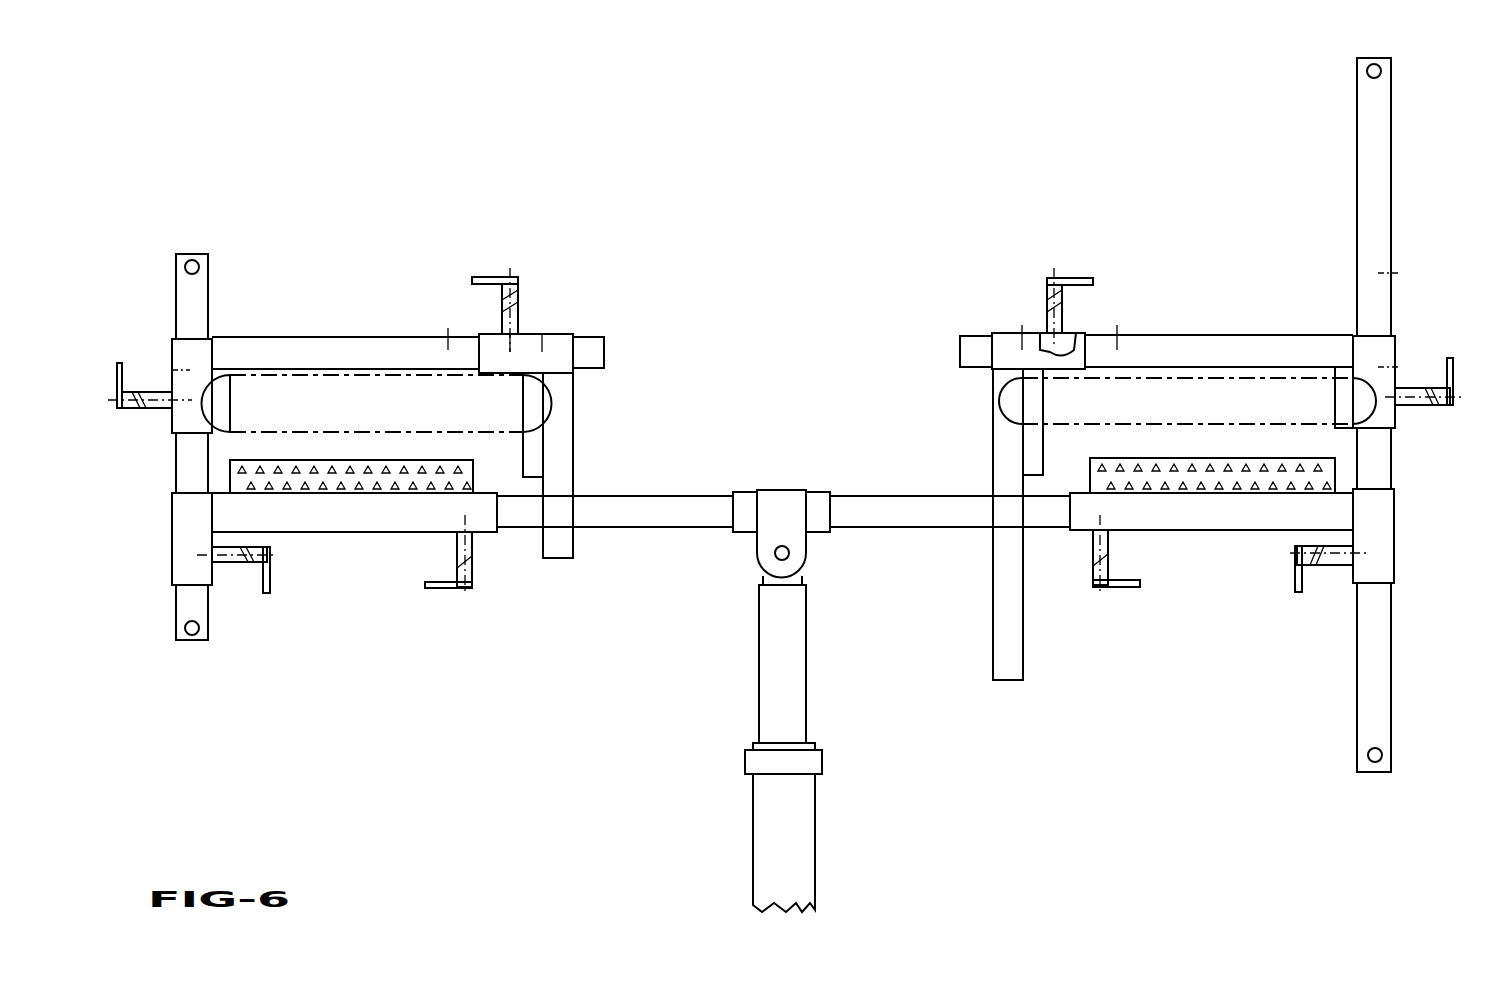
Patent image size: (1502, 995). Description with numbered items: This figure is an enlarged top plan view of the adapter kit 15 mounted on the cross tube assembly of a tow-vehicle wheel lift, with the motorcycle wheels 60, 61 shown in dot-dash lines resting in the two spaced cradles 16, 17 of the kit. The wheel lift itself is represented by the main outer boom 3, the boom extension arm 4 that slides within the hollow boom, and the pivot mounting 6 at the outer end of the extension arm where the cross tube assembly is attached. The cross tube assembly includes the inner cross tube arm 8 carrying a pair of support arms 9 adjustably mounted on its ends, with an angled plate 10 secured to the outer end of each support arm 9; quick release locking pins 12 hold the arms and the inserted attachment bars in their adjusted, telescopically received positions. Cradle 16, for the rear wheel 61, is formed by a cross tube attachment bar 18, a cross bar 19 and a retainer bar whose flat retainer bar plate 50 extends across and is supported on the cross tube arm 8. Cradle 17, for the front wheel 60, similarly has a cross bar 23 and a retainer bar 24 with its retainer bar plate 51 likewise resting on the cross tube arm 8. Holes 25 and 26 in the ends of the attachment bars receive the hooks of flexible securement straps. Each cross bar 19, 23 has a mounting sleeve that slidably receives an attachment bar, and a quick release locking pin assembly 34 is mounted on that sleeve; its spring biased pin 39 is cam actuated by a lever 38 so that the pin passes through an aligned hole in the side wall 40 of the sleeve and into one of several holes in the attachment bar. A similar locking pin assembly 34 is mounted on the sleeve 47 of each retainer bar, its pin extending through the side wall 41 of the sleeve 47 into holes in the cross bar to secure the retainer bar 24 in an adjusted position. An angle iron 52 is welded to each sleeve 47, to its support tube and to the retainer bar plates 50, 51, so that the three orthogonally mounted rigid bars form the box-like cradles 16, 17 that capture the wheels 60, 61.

The main outer boom 3 is at (790, 870).
The boom extension arm 4 is at (790, 690).
The pivot mounting 6 is at (784, 553).
The inner cross tube arm 8 is at (940, 510).
The support arm 9 is at (292, 513).
The angled plate 10 is at (370, 480).
The quick release locking pin 12 is at (230, 565).
The adapter kit 15 is at (753, 243).
The cradle 16 is at (348, 333).
The cradle 17 is at (1205, 322).
The cross tube attachment bar 18 is at (172, 462).
The cross bar 19 is at (262, 335).
The cross bar 23 is at (1138, 333).
The retainer bar 24 is at (990, 395).
The hole 25 is at (195, 640).
The hole 26 is at (1376, 71).
The quick release locking pin assembly 34 is at (517, 276).
The lever 38 is at (1450, 365).
The spring biased pin 39 is at (1053, 300).
The side wall 40 is at (175, 348).
The side wall 41 is at (565, 332).
The sleeve 47 is at (533, 345).
The retainer bar plate 50 is at (560, 545).
The retainer bar plate 51 is at (1017, 656).
The angle iron 52 is at (538, 457).
The wheel 60 is at (1290, 400).
The wheel 61 is at (392, 405).